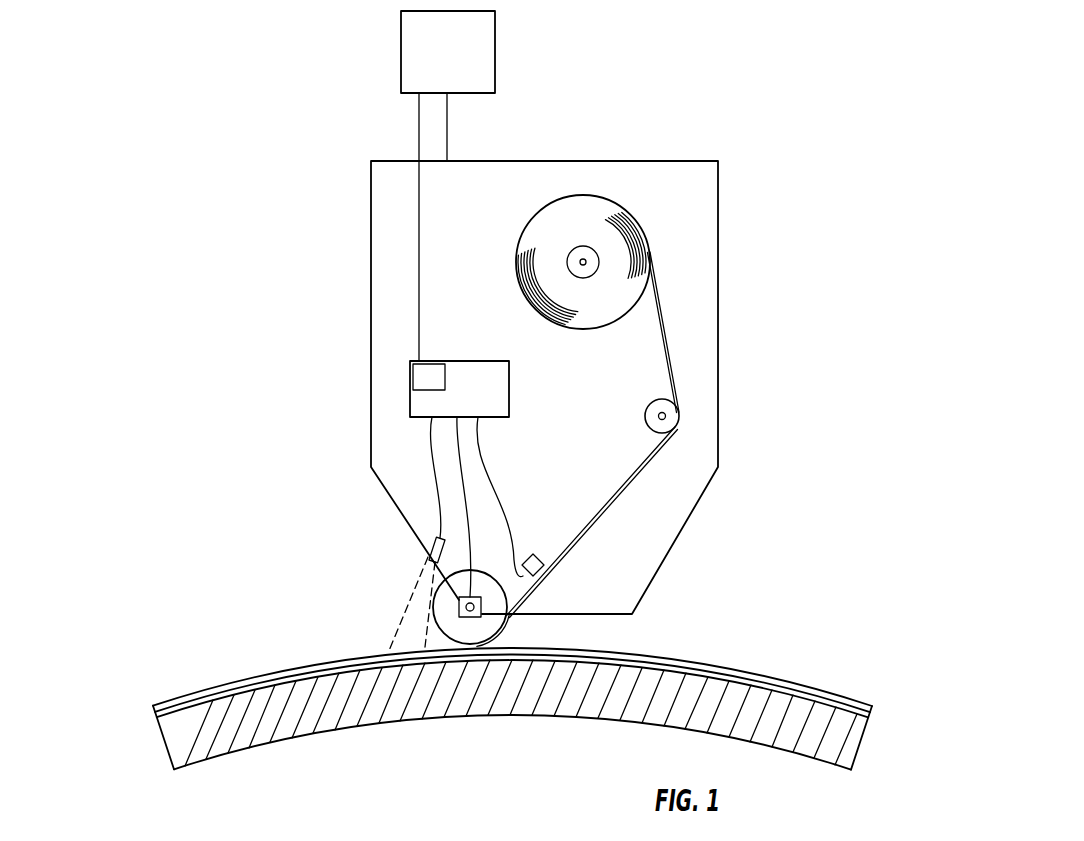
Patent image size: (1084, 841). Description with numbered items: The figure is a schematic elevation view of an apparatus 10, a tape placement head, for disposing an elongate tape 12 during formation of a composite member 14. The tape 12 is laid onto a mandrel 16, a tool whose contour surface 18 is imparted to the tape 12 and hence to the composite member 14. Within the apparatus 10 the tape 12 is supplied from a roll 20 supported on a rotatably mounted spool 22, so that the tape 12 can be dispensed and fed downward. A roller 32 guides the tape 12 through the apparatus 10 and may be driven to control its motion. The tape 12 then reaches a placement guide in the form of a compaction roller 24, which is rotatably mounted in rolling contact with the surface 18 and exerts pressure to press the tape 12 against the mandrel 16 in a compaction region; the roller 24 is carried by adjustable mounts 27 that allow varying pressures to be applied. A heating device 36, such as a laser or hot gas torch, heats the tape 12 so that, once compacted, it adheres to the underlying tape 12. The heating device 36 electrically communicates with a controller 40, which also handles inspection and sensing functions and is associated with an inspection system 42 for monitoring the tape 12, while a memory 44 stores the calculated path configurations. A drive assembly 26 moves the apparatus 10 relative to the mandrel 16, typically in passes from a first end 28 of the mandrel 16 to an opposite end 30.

The apparatus 10 is at (702, 91).
The elongate tape 12 is at (668, 336).
The composite member 14 is at (270, 673).
The mandrel 16 is at (320, 720).
The contour surface 18 is at (815, 704).
The roll 20 is at (620, 217).
The spool 22 is at (590, 250).
The compaction roller 24 is at (438, 628).
The drive assembly 26 is at (460, 62).
The mounts 27 is at (457, 617).
The first end 28 is at (152, 743).
The opposite end 30 is at (860, 761).
The roller 32 is at (678, 412).
The heating device 36 is at (539, 560).
The controller 40 is at (466, 479).
The inspection system 42 is at (432, 551).
The memory 44 is at (429, 377).